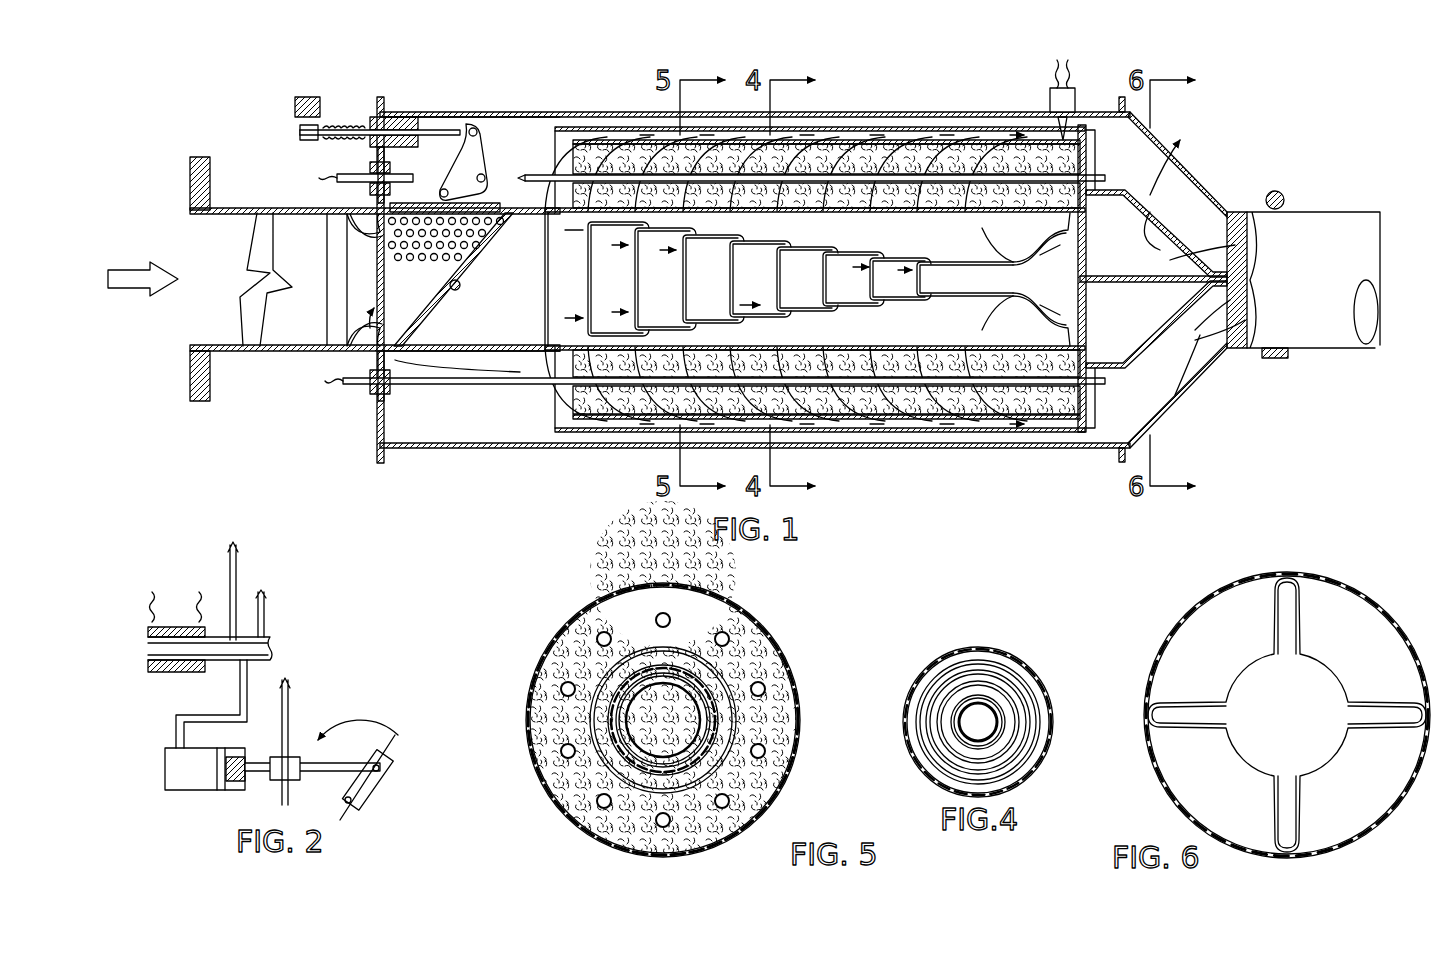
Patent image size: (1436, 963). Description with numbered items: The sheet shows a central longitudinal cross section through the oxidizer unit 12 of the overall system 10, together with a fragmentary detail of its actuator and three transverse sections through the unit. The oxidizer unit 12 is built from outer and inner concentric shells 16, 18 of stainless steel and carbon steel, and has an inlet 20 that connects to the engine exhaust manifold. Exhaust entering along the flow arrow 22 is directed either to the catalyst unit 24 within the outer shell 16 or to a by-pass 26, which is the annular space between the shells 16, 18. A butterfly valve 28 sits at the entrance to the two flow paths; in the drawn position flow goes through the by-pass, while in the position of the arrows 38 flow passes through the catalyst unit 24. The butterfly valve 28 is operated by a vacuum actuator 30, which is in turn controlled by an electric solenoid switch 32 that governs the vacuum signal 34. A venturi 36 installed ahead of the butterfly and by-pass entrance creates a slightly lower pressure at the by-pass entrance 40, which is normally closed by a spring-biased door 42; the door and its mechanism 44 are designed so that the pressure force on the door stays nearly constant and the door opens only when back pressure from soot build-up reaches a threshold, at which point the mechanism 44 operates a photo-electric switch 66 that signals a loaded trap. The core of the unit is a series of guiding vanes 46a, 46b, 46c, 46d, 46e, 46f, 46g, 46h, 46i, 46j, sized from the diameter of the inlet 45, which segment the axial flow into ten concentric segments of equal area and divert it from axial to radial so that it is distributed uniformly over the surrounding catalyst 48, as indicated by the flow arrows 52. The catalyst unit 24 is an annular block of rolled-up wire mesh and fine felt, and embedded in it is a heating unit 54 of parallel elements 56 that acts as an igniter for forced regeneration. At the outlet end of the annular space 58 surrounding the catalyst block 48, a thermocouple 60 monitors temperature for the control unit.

In FIG. 1, the overall system 10 is at (895, 455).
In FIG. 1, the oxidizer unit 12 is at (437, 449).
In FIG. 1, the outer shell 16 is at (818, 128).
In FIG. 5, the outer shell 16 is at (663, 720).
In FIG. 6, the outer shell 16 is at (1318, 580).
In FIG. 1, the inner shell 18 is at (862, 140).
In FIG. 5, the inner shell 18 is at (663, 720).
In FIG. 1, the inlet 20 is at (190, 200).
In FIG. 1, the exhaust flow arrow 22 is at (180, 286).
In FIG. 1, the catalyst unit 24 is at (940, 155).
In FIG. 5, the catalyst unit 24 is at (772, 718).
In FIG. 1, the by-pass 26 is at (500, 135).
In FIG. 1, the butterfly valve 28 is at (430, 300).
In FIG. 2, the vacuum actuator 30 is at (210, 790).
In FIG. 2, the electric solenoid switch 32 is at (210, 631).
In FIG. 2, the vacuum signal 34 is at (238, 575).
In FIG. 1, the venturi 36 is at (343, 322).
In FIG. 1, the arrows 38 is at (372, 302).
In FIG. 1, the by-pass entrance 40 is at (436, 248).
In FIG. 1, the spring-biased door 42 is at (392, 170).
In FIG. 1, the mechanism 44 is at (430, 128).
In FIG. 1, the inlet 45 is at (432, 352).
In FIG. 1, the guiding vane 46a is at (546, 228).
In FIG. 1, the guiding vane 46b is at (602, 240).
In FIG. 1, the guiding vane 46c is at (650, 305).
In FIG. 1, the guiding vane 46d is at (708, 245).
In FIG. 1, the guiding vane 46e is at (745, 300).
In FIG. 1, the guiding vane 46f is at (790, 250).
In FIG. 4, the guiding vane 46f is at (1046, 740).
In FIG. 1, the guiding vane 46g is at (835, 300).
In FIG. 4, the guiding vane 46g is at (1038, 724).
In FIG. 1, the guiding vane 46h is at (905, 263).
In FIG. 4, the guiding vane 46h is at (1027, 715).
In FIG. 1, the guiding vane 46i is at (985, 268).
In FIG. 4, the guiding vane 46i is at (1002, 690).
In FIG. 1, the guiding vane 46j is at (1070, 255).
In FIG. 4, the guiding vane 46j is at (960, 705).
In FIG. 1, the catalyst 48 is at (990, 125).
In FIG. 1, the flow direction arrows 52 is at (625, 135).
In FIG. 5, the flow direction arrows 52 is at (663, 677).
In FIG. 1, the heating unit 54 is at (458, 390).
In FIG. 1, the parallel elements 56 is at (512, 384).
In FIG. 5, the parallel elements 56 is at (665, 612).
In FIG. 1, the annular space 58 is at (1082, 432).
In FIG. 1, the thermocouple 60 is at (1080, 150).
In FIG. 1, the photo-electric switch 66 is at (305, 97).